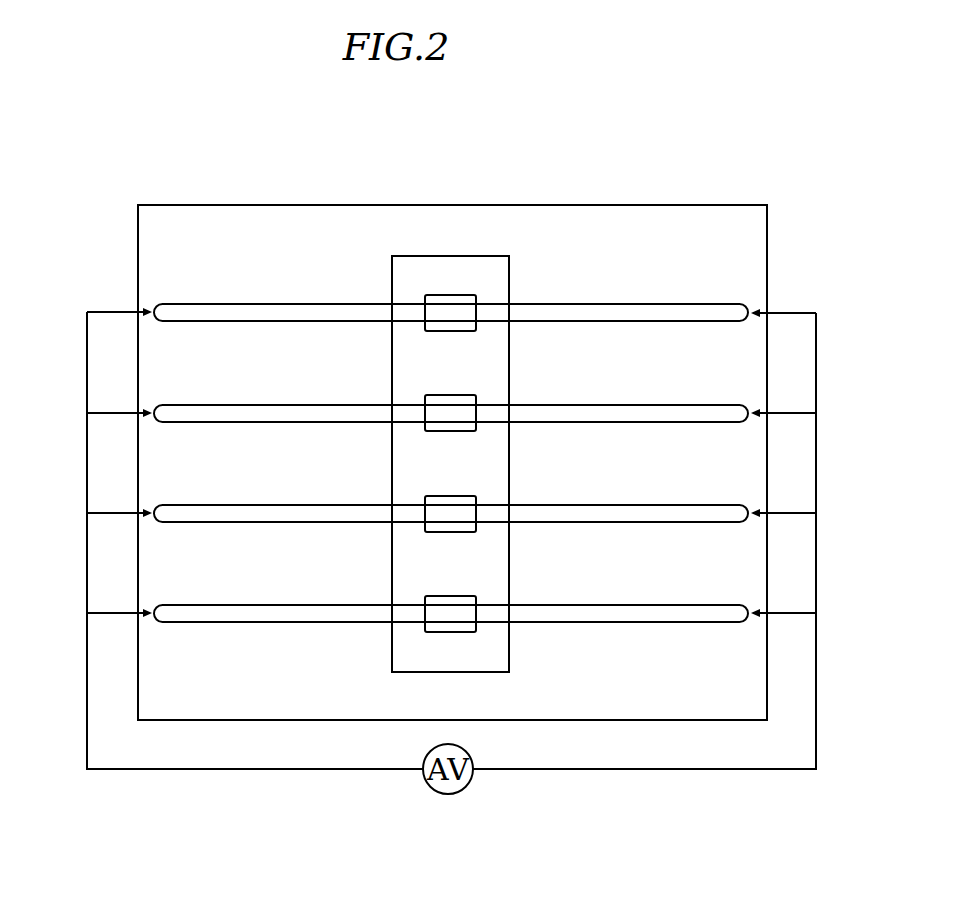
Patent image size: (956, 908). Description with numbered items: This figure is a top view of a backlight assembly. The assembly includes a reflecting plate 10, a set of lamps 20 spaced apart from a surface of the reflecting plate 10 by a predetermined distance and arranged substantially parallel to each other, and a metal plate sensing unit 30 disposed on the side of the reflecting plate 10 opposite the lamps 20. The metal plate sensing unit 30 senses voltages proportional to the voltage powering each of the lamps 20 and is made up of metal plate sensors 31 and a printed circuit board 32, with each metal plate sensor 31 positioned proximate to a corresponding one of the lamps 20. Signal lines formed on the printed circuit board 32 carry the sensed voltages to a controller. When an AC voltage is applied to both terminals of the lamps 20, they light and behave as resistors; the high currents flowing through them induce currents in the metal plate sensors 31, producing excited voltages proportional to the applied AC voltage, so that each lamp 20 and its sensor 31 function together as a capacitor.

The reflecting plate 10 is at (767, 207).
The lamps 20 is at (747, 304).
The metal plate sensing unit 30 is at (458, 416).
The metal plate sensors 31 is at (453, 295).
The printed circuit board 32 is at (490, 256).